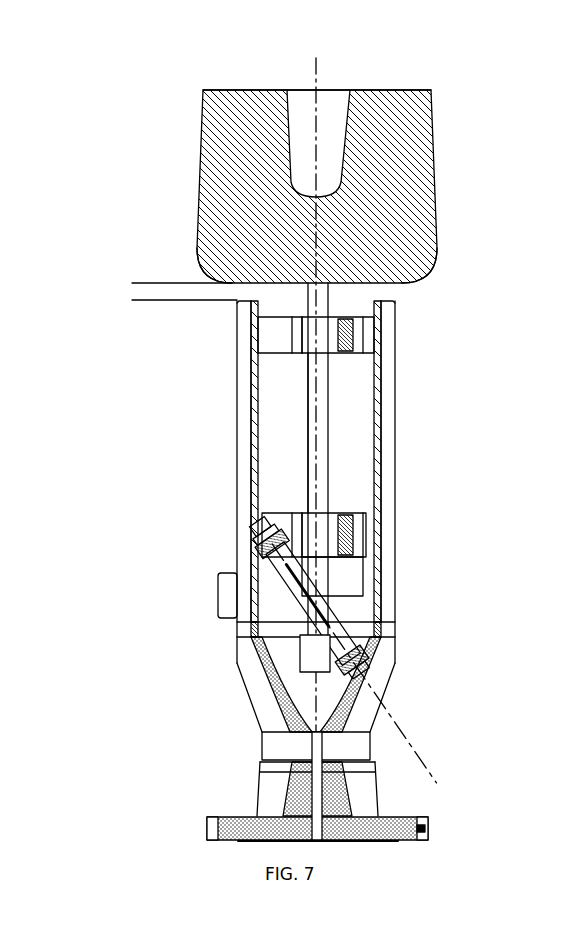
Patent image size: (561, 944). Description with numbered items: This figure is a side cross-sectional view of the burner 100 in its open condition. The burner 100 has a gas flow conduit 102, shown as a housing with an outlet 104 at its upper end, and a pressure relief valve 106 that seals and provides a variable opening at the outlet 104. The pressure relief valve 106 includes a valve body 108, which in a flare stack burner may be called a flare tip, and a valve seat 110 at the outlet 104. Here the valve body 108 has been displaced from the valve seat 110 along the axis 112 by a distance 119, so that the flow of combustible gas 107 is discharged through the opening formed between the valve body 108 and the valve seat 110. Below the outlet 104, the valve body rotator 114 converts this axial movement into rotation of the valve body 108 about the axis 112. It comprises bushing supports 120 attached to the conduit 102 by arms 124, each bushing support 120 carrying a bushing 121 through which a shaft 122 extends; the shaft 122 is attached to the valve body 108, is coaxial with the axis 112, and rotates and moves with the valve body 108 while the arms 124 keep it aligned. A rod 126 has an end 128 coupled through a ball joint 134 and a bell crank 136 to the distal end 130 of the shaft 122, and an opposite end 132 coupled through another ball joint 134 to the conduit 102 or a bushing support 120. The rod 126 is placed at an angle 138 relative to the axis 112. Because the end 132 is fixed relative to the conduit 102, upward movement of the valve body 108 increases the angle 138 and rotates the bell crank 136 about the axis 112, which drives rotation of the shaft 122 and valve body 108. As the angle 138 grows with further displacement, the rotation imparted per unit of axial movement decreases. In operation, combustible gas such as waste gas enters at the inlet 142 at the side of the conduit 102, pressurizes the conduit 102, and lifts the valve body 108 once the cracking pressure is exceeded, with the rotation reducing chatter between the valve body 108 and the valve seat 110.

The burner 100 is at (138, 126).
The gas flow conduit 102 is at (398, 445).
The outlet 104 is at (392, 314).
The pressure relief valve 106 is at (470, 200).
The flow of combustible gas 107 is at (238, 292).
The valve body 108 is at (433, 136).
The valve seat 110 is at (388, 300).
The axis 112 is at (320, 70).
The valve body rotator 114 is at (262, 644).
The distance 119 is at (150, 252).
The bushing support 120 is at (332, 352).
The bushing 121 is at (300, 346).
The shaft 122 is at (328, 424).
The arms 124 is at (268, 337).
The rod 126 is at (320, 610).
The end of rod 128 is at (364, 684).
The distal end of shaft 130 is at (323, 583).
The end of rod 132 is at (266, 535).
The ball joint 134 is at (263, 567).
The bell crank 136 is at (303, 662).
The angle 138 is at (322, 792).
The inlet 142 is at (218, 597).